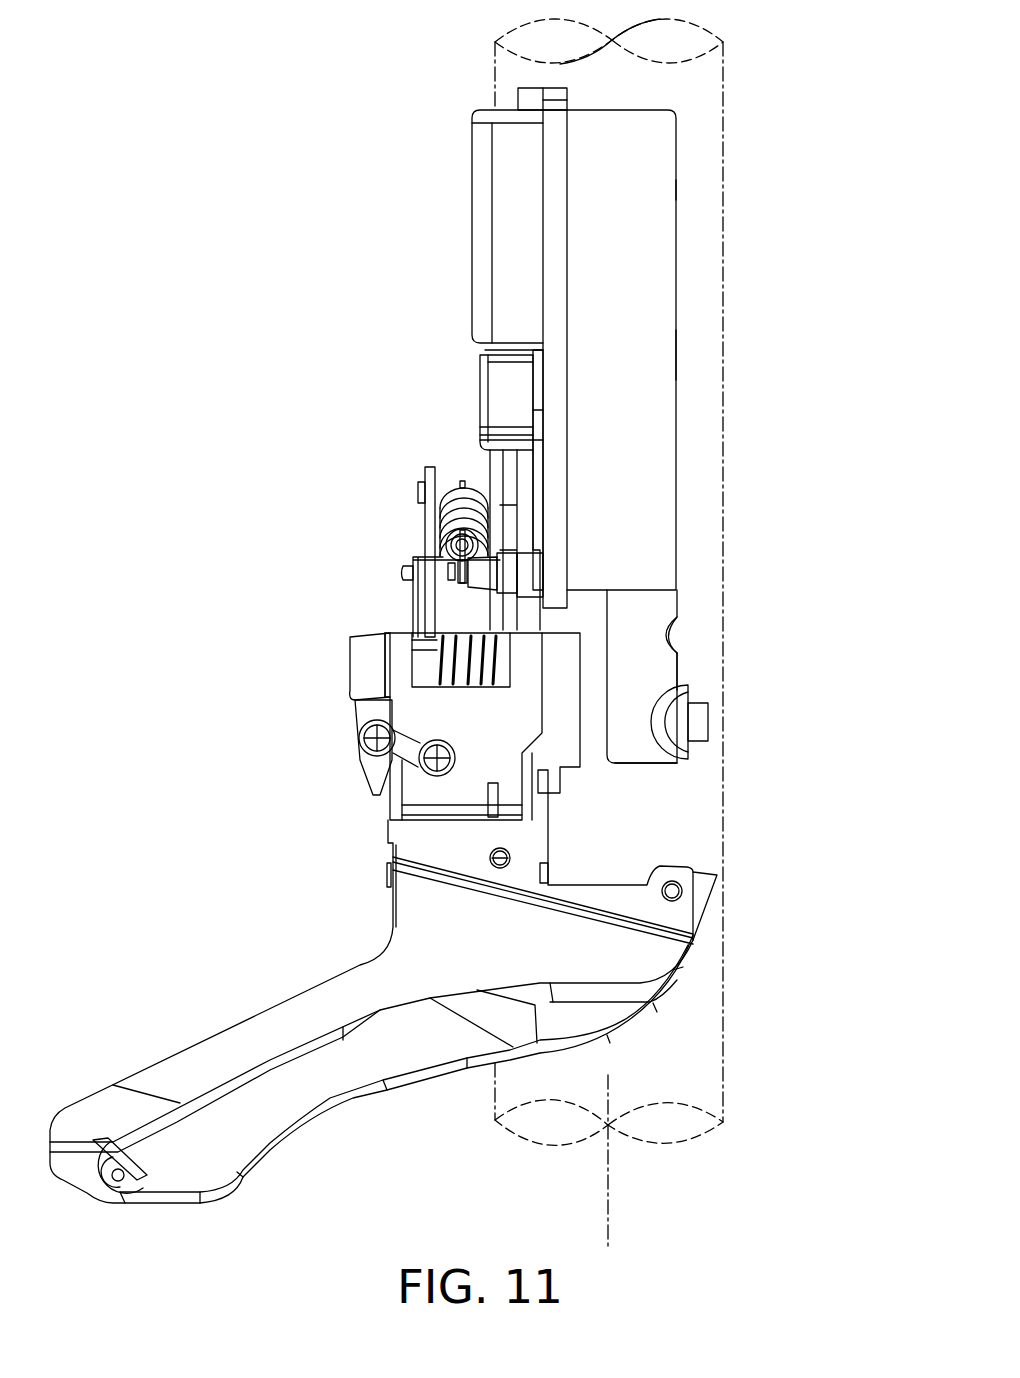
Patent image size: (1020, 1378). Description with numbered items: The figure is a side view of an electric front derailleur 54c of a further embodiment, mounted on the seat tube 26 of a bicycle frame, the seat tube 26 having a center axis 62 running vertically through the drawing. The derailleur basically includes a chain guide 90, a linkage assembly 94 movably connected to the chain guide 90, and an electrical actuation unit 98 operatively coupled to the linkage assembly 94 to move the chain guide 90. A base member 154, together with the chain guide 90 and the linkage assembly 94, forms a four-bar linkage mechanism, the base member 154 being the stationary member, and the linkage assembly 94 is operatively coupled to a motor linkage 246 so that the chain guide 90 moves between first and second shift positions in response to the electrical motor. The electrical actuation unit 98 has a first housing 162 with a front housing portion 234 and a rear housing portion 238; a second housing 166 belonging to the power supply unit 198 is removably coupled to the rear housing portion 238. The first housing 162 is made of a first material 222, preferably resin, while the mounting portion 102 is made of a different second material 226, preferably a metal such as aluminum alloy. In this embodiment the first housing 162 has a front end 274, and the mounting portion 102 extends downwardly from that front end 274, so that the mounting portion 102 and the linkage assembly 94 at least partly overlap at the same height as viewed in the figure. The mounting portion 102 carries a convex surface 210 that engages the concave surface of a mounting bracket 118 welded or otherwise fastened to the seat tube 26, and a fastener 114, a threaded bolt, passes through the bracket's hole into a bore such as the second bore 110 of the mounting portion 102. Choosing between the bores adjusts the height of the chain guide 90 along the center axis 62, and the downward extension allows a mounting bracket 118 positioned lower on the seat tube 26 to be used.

The seat tube 26 is at (727, 134).
The center axis 62 is at (606, 1175).
The electric front derailleur 54c is at (214, 403).
The chain guide 90 is at (312, 986).
The linkage assembly 94 is at (232, 745).
The electrical actuation unit 98 is at (577, 448).
The mounting portion 102 is at (640, 756).
The second bore 110 is at (672, 620).
The fastener 114 is at (703, 724).
The mounting bracket 118 is at (676, 700).
The base member 154 is at (570, 750).
The first housing 162 is at (598, 104).
The second housing 166 is at (483, 332).
The power supply unit 198 is at (480, 238).
The convex surface 210 is at (675, 665).
The first material 222 is at (638, 352).
The second material 226 is at (627, 627).
The front housing portion 234 is at (680, 185).
The rear housing portion 238 is at (541, 247).
The motor linkage 246 is at (318, 565).
The front end 274 is at (642, 565).